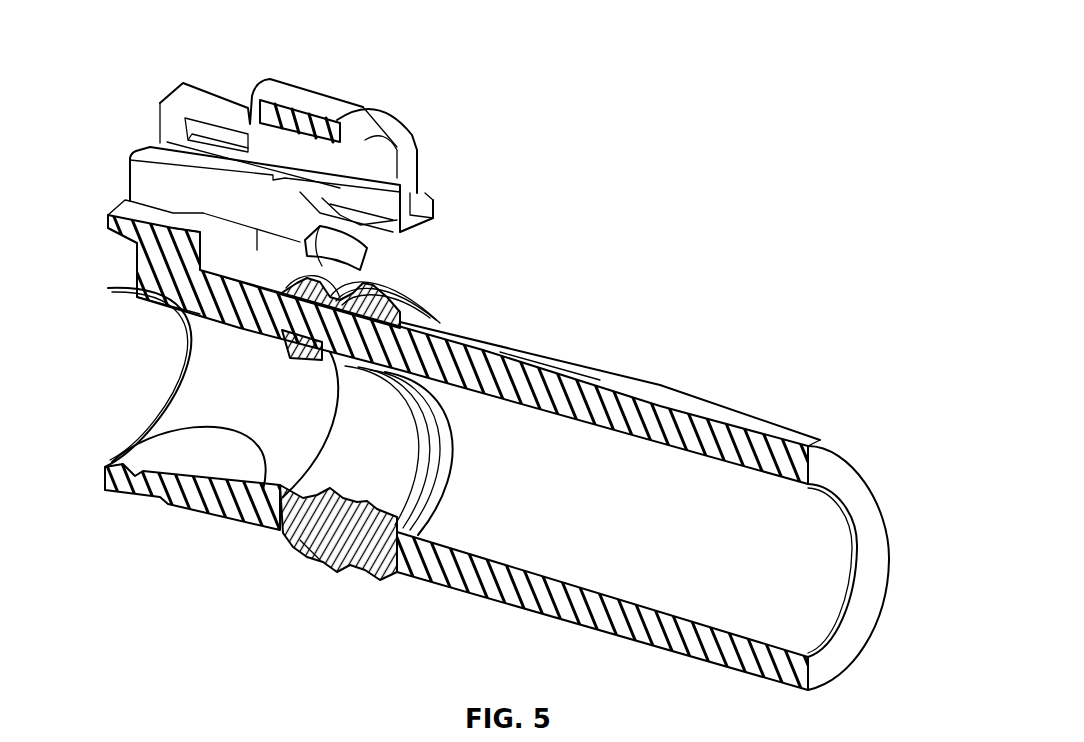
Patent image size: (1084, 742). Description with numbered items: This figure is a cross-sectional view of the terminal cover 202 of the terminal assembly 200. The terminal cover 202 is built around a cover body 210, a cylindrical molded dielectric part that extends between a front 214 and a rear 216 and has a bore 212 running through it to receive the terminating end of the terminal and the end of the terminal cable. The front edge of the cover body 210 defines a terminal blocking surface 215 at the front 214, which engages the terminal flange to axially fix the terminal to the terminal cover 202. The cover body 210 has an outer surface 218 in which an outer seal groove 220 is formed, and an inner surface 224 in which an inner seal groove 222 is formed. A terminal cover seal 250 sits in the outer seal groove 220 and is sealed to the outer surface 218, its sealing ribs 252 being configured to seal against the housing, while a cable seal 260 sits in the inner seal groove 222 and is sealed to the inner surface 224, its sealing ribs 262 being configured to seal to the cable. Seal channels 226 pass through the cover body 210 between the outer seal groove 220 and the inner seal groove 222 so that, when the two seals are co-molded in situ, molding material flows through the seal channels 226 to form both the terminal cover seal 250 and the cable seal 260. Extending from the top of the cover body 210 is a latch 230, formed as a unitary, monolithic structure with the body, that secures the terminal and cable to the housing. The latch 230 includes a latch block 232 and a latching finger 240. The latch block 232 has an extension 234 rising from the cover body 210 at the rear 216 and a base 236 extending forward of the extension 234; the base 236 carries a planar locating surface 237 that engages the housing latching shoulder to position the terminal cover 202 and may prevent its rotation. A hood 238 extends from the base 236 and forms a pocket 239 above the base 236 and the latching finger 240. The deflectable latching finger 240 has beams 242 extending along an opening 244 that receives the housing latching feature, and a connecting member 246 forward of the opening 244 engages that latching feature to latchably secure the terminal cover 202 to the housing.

The terminal assembly 200 is at (678, 70).
The terminal cover 202 is at (713, 338).
The cover body 210 is at (590, 613).
The bore 212 is at (820, 560).
The front 214 is at (838, 662).
The terminal blocking surface 215 is at (858, 470).
The rear 216 is at (102, 480).
The outer surface 218 is at (872, 612).
The outer seal groove 220 is at (278, 536).
The inner seal groove 222 is at (275, 487).
The inner surface 224 is at (150, 436).
The seal channels 226 is at (420, 568).
The latch 230 is at (302, 50).
The latch block 232 is at (96, 208).
The extension 234 is at (187, 232).
The base 236 is at (428, 216).
The locating surface 237 is at (413, 233).
The hood 238 is at (387, 128).
The pocket 239 is at (383, 163).
The latching finger 240 is at (195, 299).
The beams 242 is at (322, 198).
The opening 244 is at (285, 254).
The connecting member 246 is at (333, 253).
The terminal cover seal 250 is at (330, 575).
The sealing ribs 252 is at (347, 565).
The cable seal 260 is at (430, 430).
The sealing ribs 262 is at (405, 477).